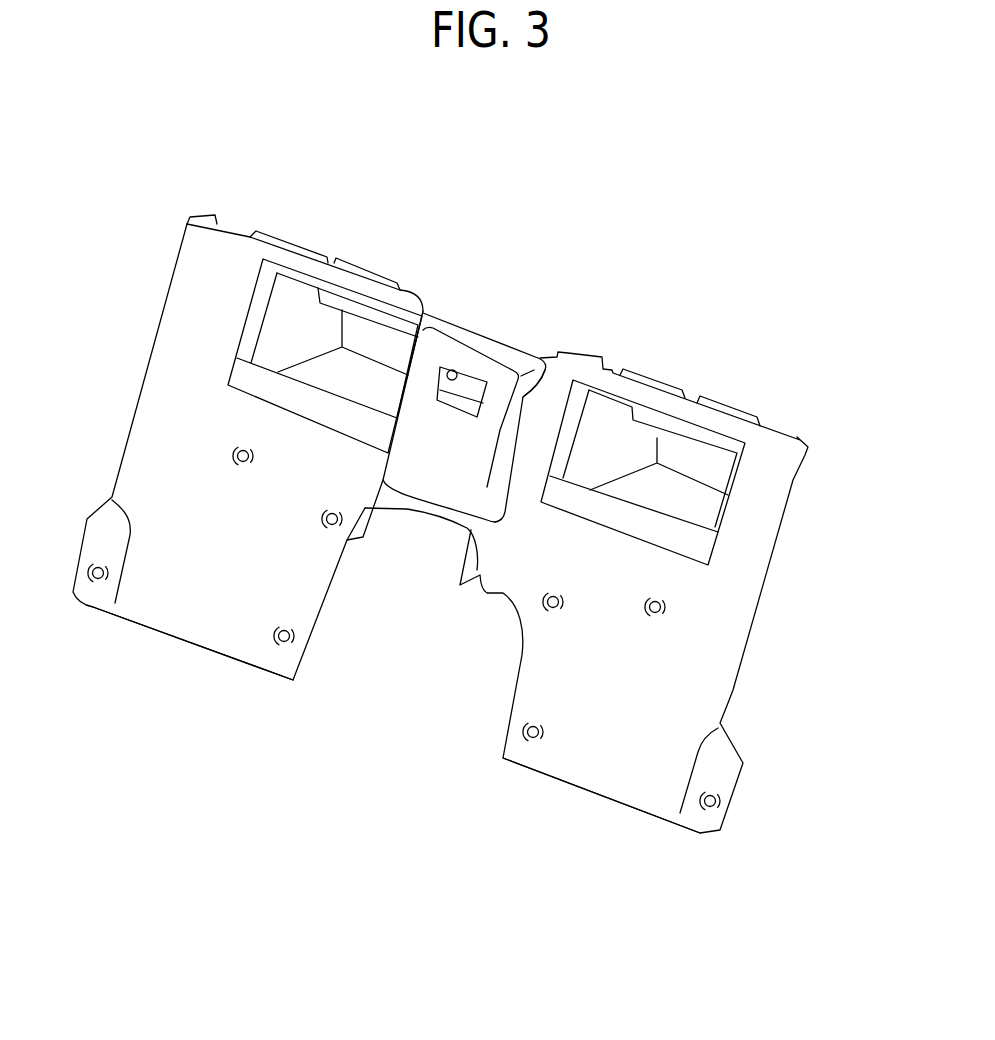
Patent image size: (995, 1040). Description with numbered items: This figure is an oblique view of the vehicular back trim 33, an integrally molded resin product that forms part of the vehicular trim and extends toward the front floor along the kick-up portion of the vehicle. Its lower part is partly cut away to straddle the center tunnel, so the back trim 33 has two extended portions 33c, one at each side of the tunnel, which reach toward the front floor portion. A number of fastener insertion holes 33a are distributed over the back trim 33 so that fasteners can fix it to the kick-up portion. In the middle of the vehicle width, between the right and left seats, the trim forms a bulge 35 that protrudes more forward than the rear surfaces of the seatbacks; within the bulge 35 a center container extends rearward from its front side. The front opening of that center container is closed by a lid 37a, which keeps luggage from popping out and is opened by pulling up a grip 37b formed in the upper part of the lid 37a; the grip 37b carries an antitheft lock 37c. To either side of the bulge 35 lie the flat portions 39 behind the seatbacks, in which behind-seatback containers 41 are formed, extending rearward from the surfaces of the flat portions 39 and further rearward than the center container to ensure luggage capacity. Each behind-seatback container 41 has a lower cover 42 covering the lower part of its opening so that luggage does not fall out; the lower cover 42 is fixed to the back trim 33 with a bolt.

The back trim 33 is at (770, 327).
The fastener insertion holes 33a is at (332, 524).
The extended portions 33c is at (193, 627).
The bulge 35 is at (540, 410).
The lid 37a is at (428, 477).
The grip 37b is at (473, 382).
The antitheft lock 37c is at (452, 373).
The flat portions 39 is at (153, 437).
The behind-seatback containers 41 is at (300, 328).
The lower cover 42 is at (243, 377).